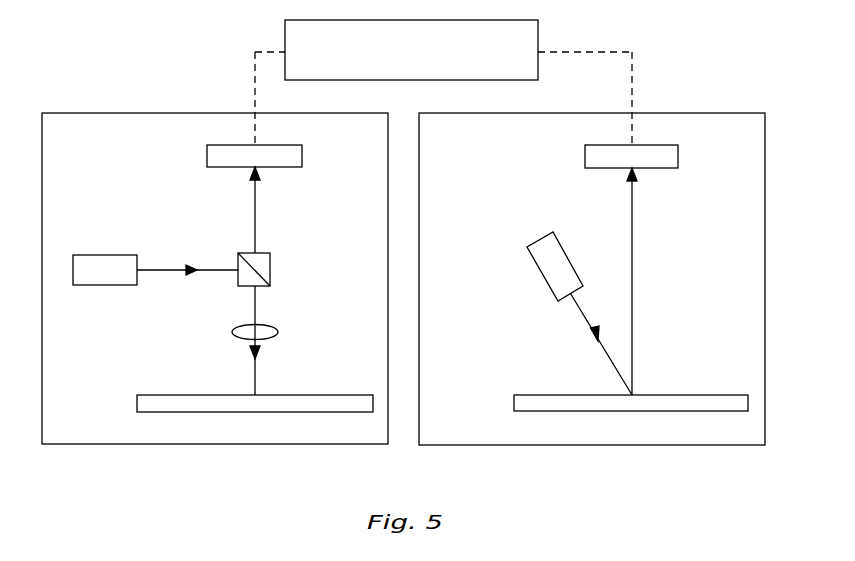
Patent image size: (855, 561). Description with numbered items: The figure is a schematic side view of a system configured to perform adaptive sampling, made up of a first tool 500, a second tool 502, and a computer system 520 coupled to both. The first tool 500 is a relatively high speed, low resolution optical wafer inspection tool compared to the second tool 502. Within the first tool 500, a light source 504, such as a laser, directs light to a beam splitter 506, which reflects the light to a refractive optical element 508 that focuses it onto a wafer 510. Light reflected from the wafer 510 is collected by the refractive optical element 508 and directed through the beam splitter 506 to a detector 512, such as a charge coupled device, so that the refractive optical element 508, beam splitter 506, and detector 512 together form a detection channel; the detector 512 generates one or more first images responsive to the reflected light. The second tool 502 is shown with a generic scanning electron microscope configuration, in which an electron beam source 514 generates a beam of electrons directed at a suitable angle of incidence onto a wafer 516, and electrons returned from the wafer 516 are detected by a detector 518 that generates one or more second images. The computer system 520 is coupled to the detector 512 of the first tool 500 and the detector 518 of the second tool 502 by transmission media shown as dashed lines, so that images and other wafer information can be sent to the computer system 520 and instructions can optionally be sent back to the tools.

The first tool 500 is at (140, 113).
The second tool 502 is at (735, 113).
The light source 504 is at (122, 255).
The beam splitter 506 is at (270, 270).
The refractive optical element 508 is at (277, 330).
The wafer 510 is at (183, 395).
The detector 512 is at (207, 157).
The electron beam source 514 is at (537, 245).
The wafer 516 is at (560, 395).
The detector 518 is at (585, 157).
The computer system 520 is at (443, 82).